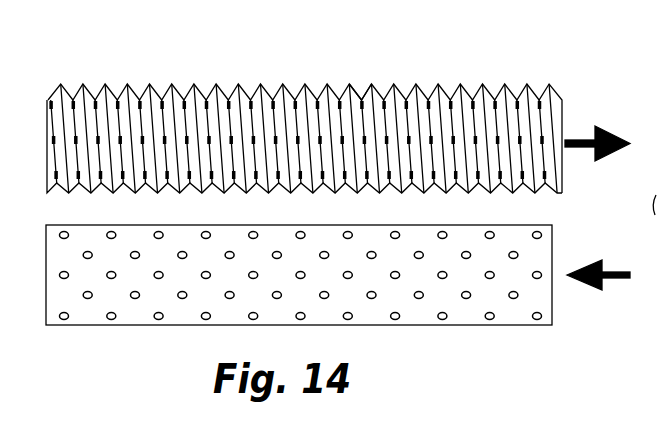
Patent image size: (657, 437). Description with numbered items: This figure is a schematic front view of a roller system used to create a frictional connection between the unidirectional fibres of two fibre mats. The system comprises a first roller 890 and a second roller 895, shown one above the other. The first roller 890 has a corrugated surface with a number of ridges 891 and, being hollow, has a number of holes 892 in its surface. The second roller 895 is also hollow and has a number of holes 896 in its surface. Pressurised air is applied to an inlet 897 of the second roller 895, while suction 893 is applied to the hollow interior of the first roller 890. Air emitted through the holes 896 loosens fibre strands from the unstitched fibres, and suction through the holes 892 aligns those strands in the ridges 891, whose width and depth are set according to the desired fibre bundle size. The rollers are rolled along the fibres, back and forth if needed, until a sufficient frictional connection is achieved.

The first roller 890 is at (304, 114).
The ridges 891 is at (362, 96).
The holes 892 is at (208, 99).
The suction 893 is at (581, 139).
The second roller 895 is at (299, 299).
The holes 896 is at (513, 300).
The inlet 897 is at (612, 270).